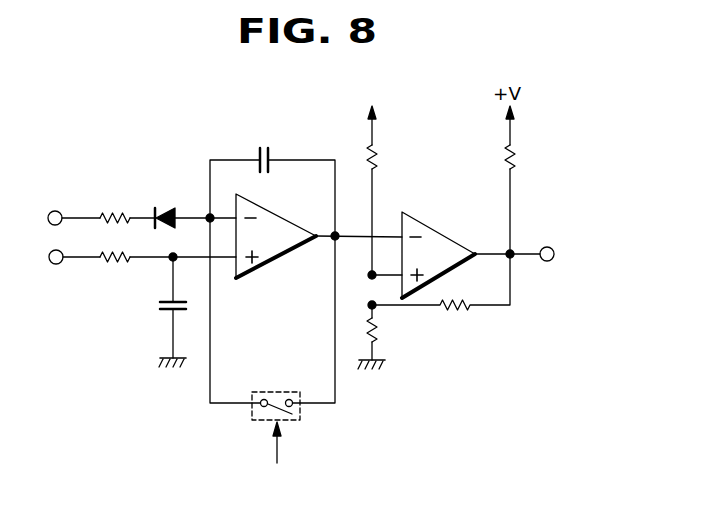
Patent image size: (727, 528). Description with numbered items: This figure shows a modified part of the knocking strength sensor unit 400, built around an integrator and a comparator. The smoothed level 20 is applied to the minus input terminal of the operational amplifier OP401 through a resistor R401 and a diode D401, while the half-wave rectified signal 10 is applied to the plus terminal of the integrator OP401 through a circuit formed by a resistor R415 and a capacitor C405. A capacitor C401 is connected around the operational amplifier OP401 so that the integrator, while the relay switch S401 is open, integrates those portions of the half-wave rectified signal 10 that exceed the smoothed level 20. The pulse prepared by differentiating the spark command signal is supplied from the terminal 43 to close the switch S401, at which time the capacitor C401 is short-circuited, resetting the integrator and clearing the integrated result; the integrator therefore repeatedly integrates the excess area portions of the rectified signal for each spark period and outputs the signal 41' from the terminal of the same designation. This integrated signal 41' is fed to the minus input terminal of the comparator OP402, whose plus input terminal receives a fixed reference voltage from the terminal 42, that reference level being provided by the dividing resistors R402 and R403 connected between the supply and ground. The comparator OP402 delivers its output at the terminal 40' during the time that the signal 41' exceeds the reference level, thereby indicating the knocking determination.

The smoothed level 20 is at (56, 211).
The half-wave rectified signal 10 is at (55, 264).
The knocking strength sensor unit 400 is at (150, 150).
The resistor R401 is at (111, 214).
The diode D401 is at (163, 206).
The resistor R415 is at (115, 260).
The capacitor C405 is at (161, 307).
The capacitor C401 is at (265, 150).
The operational amplifier OP401 is at (262, 277).
The output signal terminal 41' is at (314, 258).
The reference signal terminal 42 is at (358, 290).
The dividing resistor R403 is at (378, 157).
The dividing resistor R402 is at (377, 330).
The comparator OP402 is at (438, 224).
The knocking determination signal output terminal 40' is at (611, 218).
The relay switch S401 is at (300, 412).
The differentiated spark command signal terminal 43 is at (277, 465).